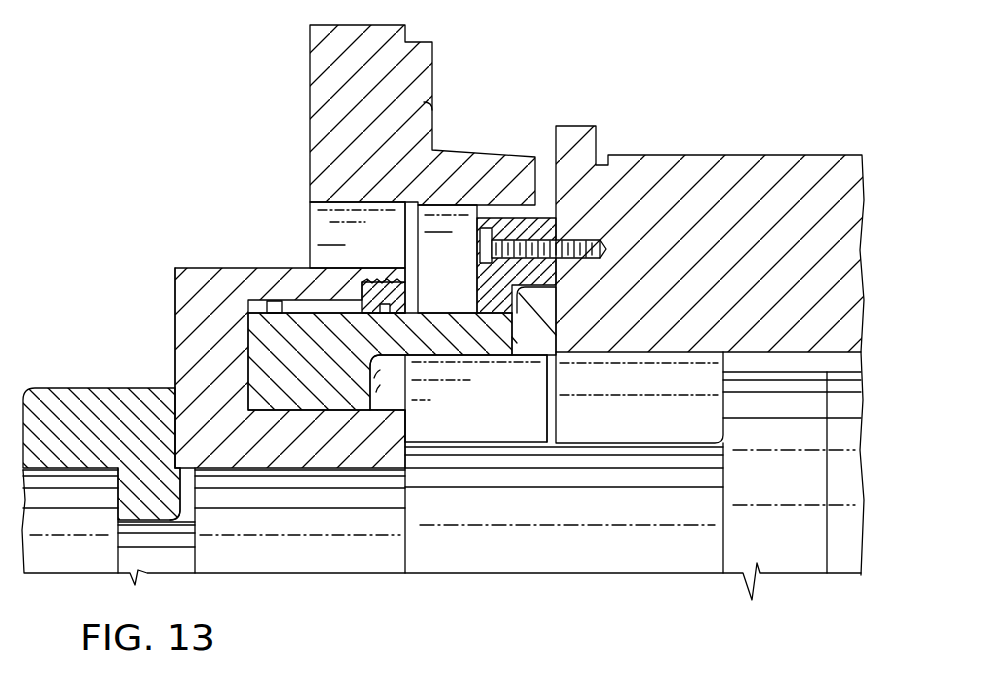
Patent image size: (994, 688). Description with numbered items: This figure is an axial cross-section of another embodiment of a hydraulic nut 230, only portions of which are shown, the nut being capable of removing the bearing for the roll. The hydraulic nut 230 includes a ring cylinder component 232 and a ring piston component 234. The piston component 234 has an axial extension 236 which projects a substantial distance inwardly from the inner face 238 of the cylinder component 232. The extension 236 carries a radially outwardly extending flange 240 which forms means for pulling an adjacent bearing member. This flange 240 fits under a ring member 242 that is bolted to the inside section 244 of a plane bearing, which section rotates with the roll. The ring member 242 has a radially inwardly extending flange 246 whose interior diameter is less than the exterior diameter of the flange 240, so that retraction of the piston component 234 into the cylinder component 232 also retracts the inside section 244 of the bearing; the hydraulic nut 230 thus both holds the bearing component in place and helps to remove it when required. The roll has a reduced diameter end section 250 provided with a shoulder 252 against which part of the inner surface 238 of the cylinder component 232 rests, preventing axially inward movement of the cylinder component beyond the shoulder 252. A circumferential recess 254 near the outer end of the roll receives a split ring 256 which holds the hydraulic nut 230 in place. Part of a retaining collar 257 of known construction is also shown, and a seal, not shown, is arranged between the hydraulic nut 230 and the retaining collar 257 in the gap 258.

The hydraulic nut 230 is at (175, 300).
The ring cylinder component 232 is at (212, 268).
The ring piston component 234 is at (550, 360).
The axial extension 236 is at (560, 360).
The inner face 238 is at (407, 423).
The radially outwardly extending flange 240 is at (558, 297).
The ring member 242 is at (478, 228).
The inside section 244 is at (683, 152).
The radially inwardly extending flange 246 is at (473, 287).
The reduced diameter end section 250 is at (508, 536).
The shoulder 252 is at (405, 458).
The circumferential recess 254 is at (195, 525).
The split ring 256 is at (95, 388).
The retaining collar 257 is at (420, 90).
The gap 258 is at (342, 239).